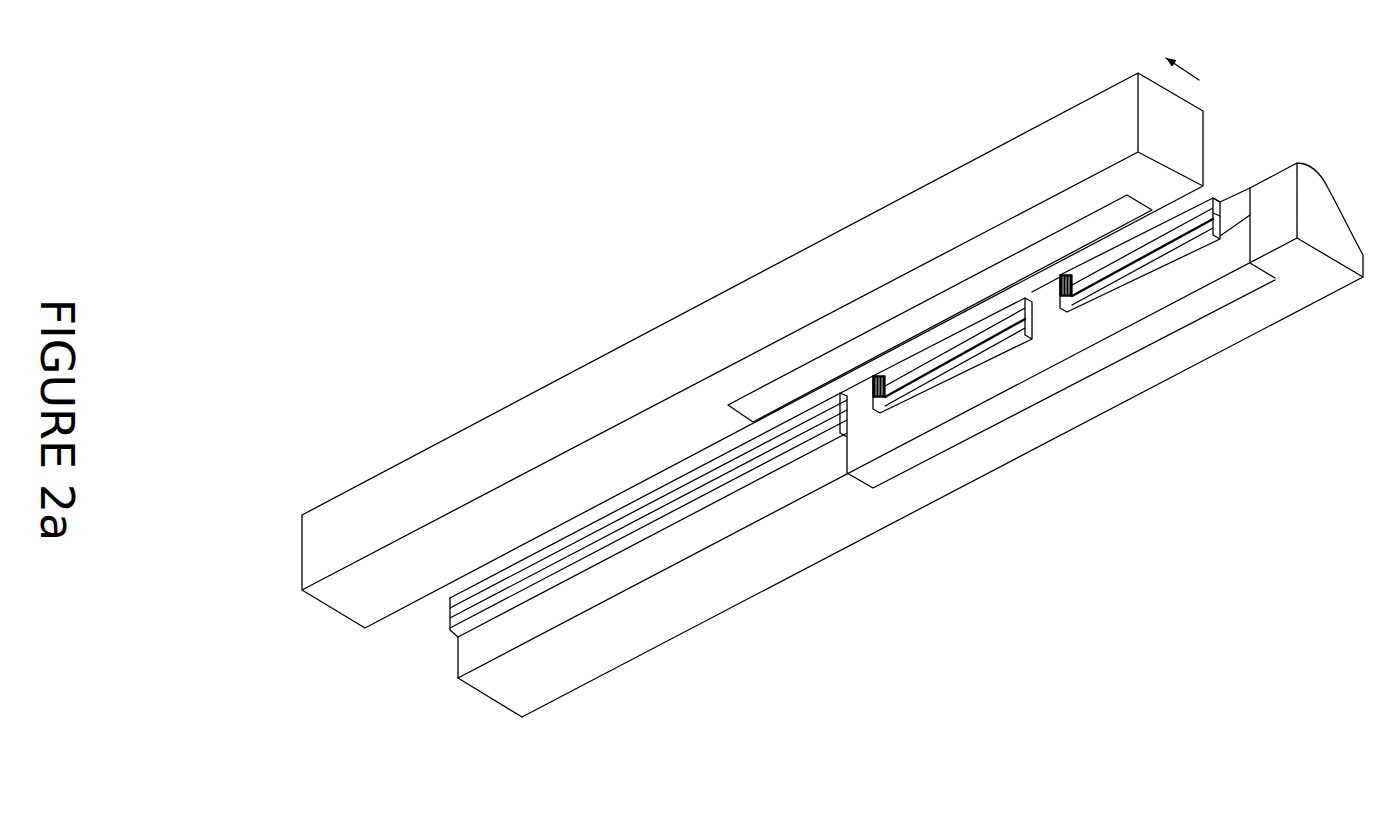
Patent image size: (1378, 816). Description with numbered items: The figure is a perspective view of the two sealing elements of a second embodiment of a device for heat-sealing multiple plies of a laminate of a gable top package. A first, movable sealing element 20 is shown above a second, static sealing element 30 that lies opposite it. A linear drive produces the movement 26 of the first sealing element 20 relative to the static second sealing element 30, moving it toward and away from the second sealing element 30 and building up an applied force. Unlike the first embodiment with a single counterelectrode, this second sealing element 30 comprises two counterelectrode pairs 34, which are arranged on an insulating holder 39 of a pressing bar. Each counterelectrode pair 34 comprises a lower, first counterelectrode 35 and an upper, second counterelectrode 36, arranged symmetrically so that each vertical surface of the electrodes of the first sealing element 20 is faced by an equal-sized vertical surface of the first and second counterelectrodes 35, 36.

The first sealing element 20 is at (562, 479).
The movement 26 is at (1201, 81).
The second sealing element 30 is at (776, 610).
The counterelectrode pair 34 is at (990, 376).
The first counterelectrode 35 is at (1207, 212).
The second counterelectrode 36 is at (895, 398).
The insulating holder 39 is at (1193, 313).